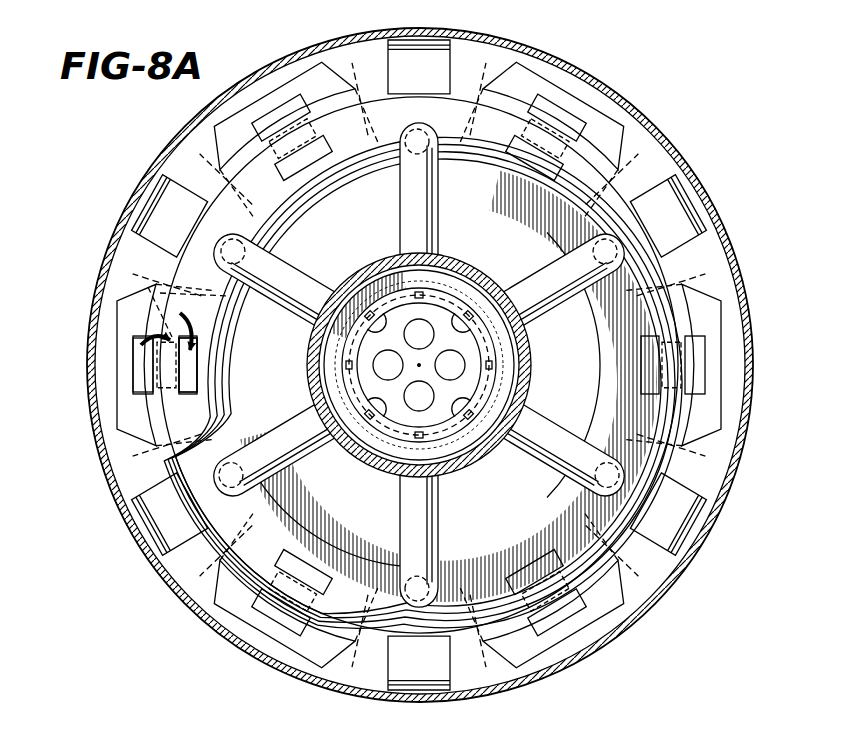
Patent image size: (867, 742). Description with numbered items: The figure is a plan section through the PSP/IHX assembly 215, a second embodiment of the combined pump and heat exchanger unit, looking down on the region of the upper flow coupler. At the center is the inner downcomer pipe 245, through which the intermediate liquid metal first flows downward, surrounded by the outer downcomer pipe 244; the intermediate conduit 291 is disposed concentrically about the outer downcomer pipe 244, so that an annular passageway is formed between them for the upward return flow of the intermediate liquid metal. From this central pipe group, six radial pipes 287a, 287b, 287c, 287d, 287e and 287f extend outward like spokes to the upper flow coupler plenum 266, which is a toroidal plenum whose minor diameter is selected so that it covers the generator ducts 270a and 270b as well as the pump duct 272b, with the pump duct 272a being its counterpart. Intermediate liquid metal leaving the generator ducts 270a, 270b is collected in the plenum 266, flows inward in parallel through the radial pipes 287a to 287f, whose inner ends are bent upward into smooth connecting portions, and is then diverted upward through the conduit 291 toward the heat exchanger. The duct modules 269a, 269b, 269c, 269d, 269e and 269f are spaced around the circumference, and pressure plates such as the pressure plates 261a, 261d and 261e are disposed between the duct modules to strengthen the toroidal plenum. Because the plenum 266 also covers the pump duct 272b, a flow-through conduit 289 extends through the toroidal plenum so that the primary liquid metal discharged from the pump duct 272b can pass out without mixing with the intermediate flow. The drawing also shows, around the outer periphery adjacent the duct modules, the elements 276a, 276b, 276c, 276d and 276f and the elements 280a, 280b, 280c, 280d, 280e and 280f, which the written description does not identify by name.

The PSP/IHX assembly 215 is at (668, 98).
The outer downcomer pipe 244 is at (497, 368).
The inner downcomer pipe 245 is at (681, 160).
The pressure plate 261a is at (430, 632).
The pressure plate 261d is at (408, 88).
The pressure plate 261e is at (642, 228).
The upper flow coupler plenum 266 is at (597, 411).
The duct module 269a is at (270, 630).
The duct module 269b is at (128, 388).
The duct module 269c is at (287, 104).
The duct module 269d is at (568, 106).
The duct module 269e is at (706, 366).
The duct module 269f is at (578, 630).
The generator duct 270a is at (166, 312).
The generator duct 270b is at (233, 353).
The pump duct 272a is at (139, 357).
The pump duct 272b is at (196, 393).
The outer block 276a is at (429, 690).
The outer block 276b is at (163, 540).
The outer block 276c is at (150, 200).
The outer block 276d is at (448, 52).
The outer block 276f is at (694, 533).
The pawl carrier 280a is at (344, 652).
The pawl carrier 280b is at (149, 440).
The pawl carrier 280c is at (209, 143).
The pawl carrier 280d is at (488, 92).
The pawl carrier 280e is at (708, 297).
The pawl carrier 280f is at (628, 584).
The radial pipe 287a is at (437, 538).
The radial pipe 287b is at (290, 461).
The radial pipe 287c is at (290, 262).
The radial pipe 287d is at (441, 224).
The radial pipe 287e is at (550, 272).
The radial pipe 287f is at (546, 465).
The flow-through conduit 289 is at (196, 371).
The intermediate conduit 291 is at (506, 336).